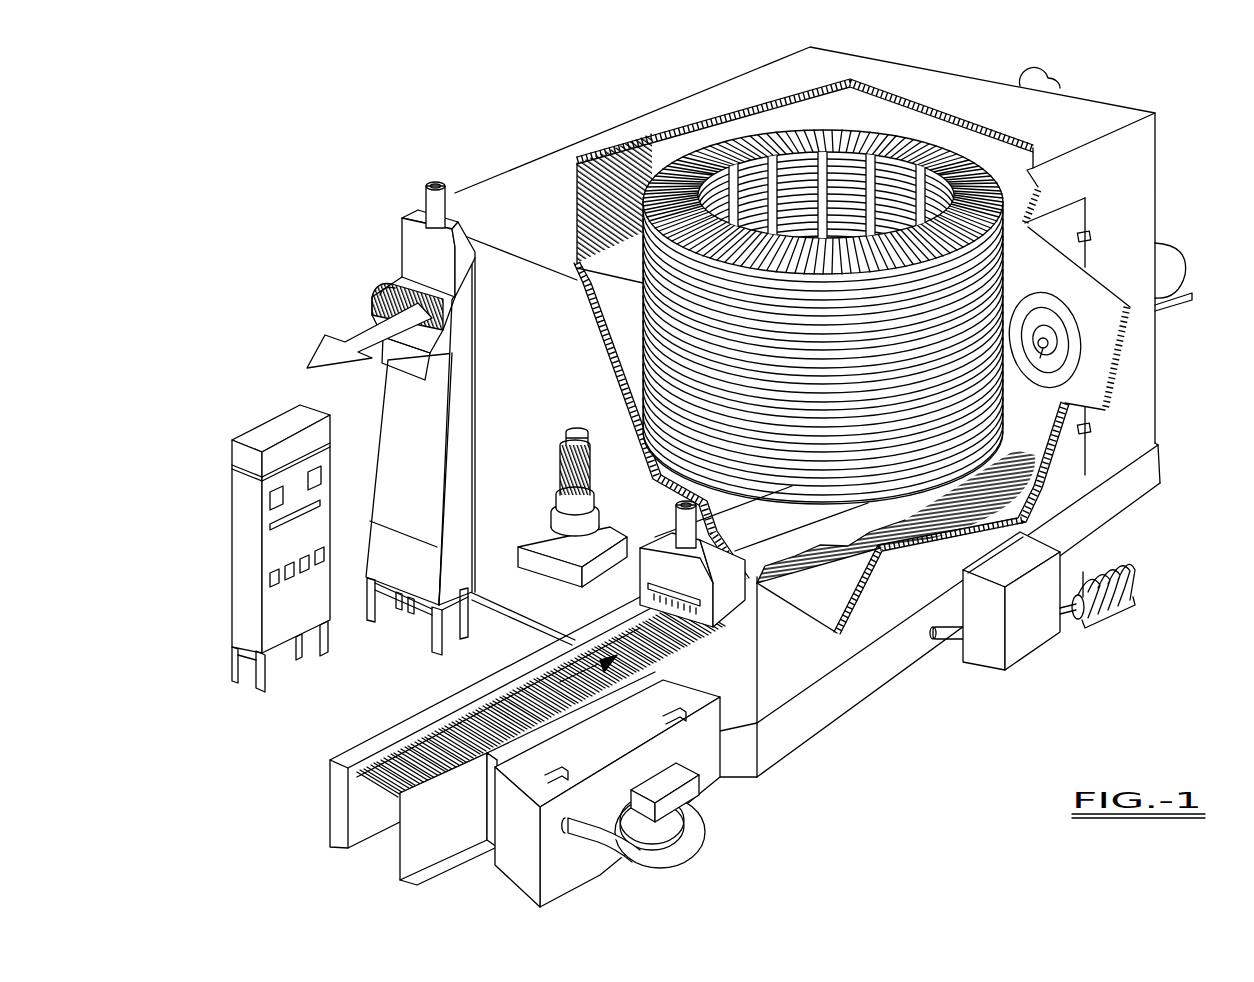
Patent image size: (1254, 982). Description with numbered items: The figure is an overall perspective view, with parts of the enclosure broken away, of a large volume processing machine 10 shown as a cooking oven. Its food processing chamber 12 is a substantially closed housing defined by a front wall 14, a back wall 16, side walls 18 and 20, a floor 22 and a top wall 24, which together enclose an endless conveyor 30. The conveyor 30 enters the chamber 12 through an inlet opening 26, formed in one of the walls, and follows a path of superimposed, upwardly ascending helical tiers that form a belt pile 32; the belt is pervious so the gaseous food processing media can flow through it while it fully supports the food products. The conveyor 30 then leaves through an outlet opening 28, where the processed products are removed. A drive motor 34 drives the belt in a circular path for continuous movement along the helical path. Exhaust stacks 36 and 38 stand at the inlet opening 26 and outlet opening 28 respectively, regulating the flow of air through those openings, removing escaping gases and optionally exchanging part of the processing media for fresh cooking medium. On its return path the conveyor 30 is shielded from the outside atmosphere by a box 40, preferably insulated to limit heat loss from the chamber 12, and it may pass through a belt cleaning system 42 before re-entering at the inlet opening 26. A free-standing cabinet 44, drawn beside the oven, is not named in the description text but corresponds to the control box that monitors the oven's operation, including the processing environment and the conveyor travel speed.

The processing machine 10 is at (410, 150).
The food processing chamber 12 is at (636, 142).
The front wall 14 is at (1130, 200).
The back wall 16 is at (708, 86).
The side wall 18 is at (1082, 92).
The side wall 20 is at (548, 394).
The floor 22 is at (1013, 497).
The top wall 24 is at (918, 90).
The inlet opening 26 is at (750, 632).
The outlet opening 28 is at (345, 318).
The endless conveyor 30 is at (470, 708).
The belt pile 32 is at (1012, 398).
The drive motor 34 is at (565, 482).
The exhaust stack 36 is at (655, 540).
The exhaust stack 38 is at (410, 242).
The box 40 is at (420, 474).
The belt cleaning system 42 is at (715, 856).
The control panel 44 is at (258, 432).